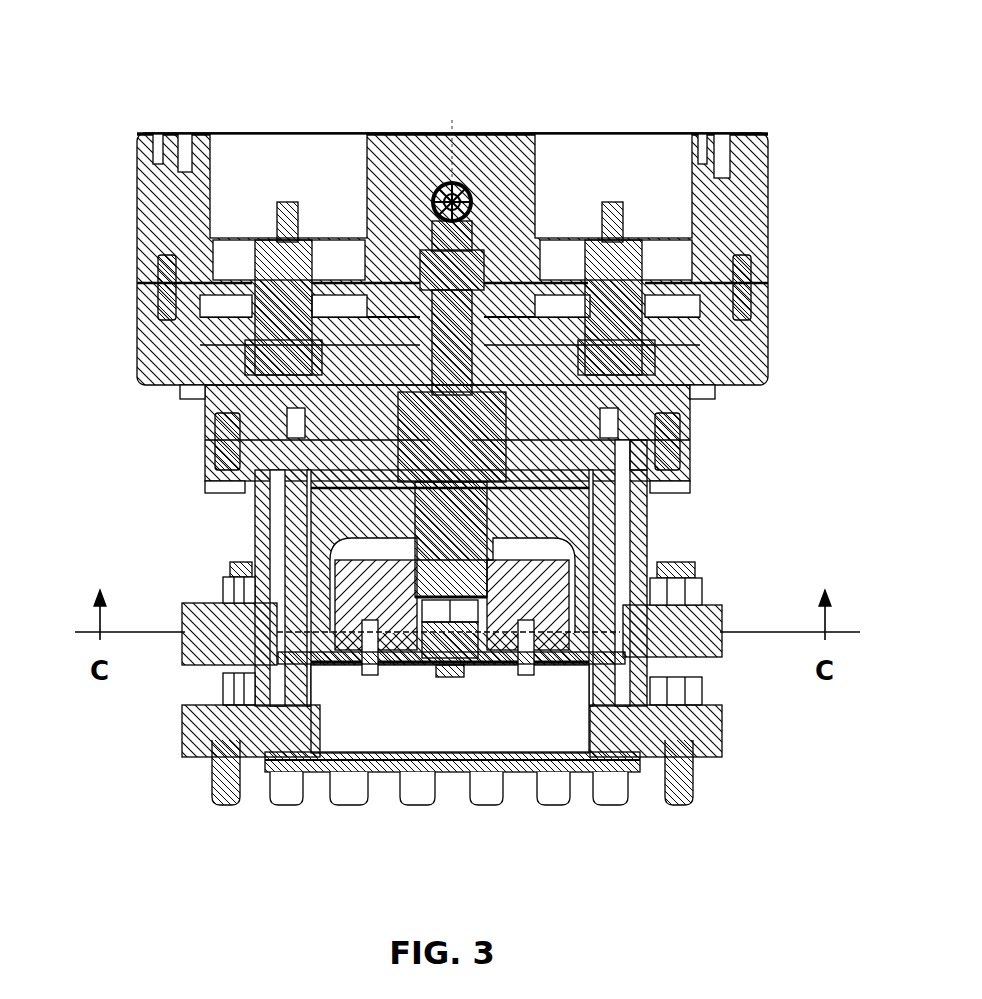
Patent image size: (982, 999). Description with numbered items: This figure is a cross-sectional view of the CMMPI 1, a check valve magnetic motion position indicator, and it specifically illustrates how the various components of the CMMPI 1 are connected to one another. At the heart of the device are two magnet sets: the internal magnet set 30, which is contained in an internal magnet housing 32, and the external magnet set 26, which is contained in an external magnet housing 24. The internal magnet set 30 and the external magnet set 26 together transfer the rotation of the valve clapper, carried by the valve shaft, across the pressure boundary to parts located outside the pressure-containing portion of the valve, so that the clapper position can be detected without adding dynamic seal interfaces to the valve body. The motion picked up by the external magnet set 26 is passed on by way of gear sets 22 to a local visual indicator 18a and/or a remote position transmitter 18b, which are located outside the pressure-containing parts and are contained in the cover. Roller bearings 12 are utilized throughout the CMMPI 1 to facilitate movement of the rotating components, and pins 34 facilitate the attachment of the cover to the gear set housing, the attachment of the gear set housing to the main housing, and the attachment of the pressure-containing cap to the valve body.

The CMMPI 1 is at (182, 66).
The roller bearings 12 is at (137, 242).
The local visual indicator 18a is at (274, 214).
The remote position transmitter 18b is at (628, 222).
The gear sets 22 is at (137, 345).
The external magnet housing 24 is at (648, 535).
The external magnet set 26 is at (620, 652).
The internal magnet set 30 is at (595, 700).
The internal magnet housing 32 is at (400, 670).
The pins 34 is at (705, 290).